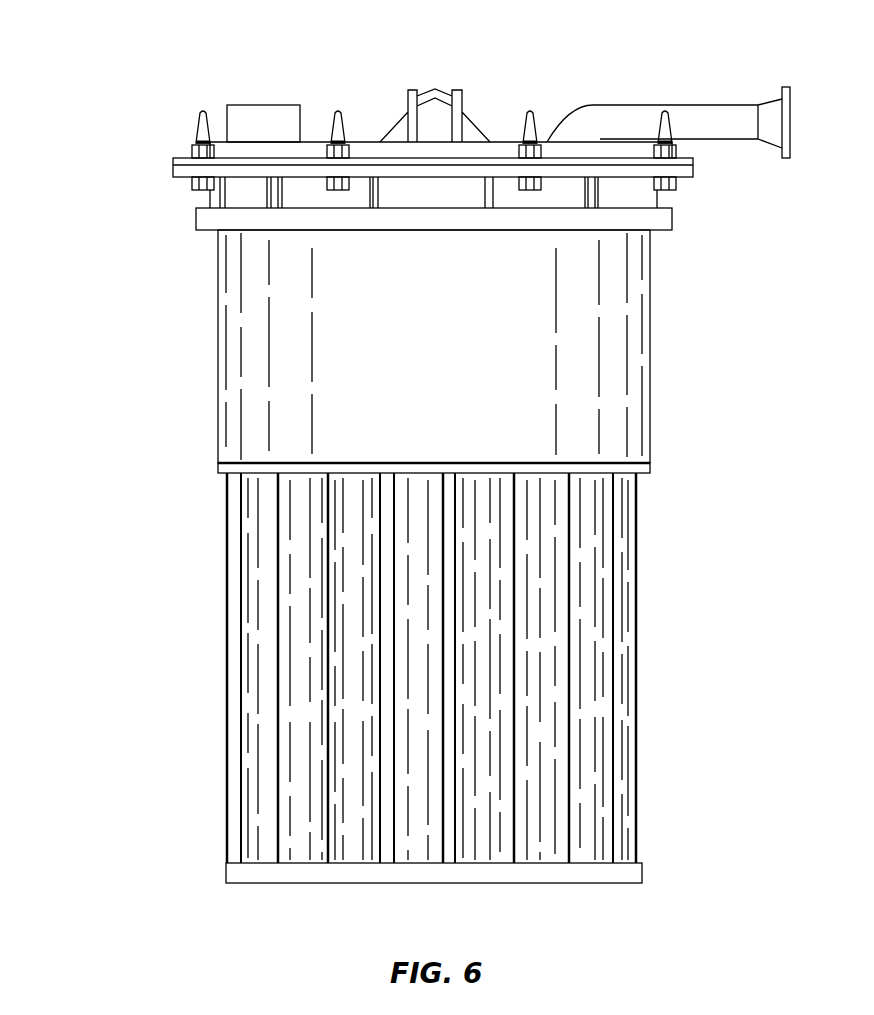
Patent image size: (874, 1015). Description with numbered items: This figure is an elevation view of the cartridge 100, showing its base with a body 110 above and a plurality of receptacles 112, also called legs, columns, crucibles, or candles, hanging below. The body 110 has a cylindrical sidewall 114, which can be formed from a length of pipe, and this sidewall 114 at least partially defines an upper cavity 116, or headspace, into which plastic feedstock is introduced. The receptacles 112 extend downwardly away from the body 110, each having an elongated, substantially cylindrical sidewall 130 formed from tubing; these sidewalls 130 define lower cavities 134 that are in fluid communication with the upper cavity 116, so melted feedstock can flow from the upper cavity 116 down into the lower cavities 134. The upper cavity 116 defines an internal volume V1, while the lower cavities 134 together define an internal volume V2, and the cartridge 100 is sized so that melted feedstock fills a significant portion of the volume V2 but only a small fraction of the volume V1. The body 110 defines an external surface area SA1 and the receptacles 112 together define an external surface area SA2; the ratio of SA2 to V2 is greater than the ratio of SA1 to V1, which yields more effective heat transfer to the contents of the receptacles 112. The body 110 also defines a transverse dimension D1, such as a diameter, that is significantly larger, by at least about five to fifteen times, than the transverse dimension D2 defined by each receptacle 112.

The cartridge 100 is at (120, 92).
The body 110 is at (690, 415).
The receptacles 112 is at (652, 718).
The sidewall 114 is at (635, 302).
The upper cavity 116 is at (577, 362).
The sidewall 130 is at (625, 798).
The lower cavities 134 is at (548, 618).
The internal volume V1 is at (298, 275).
The internal volume V2 is at (353, 618).
The external surface area SA1 is at (270, 368).
The external surface area SA2 is at (353, 837).
The transverse dimension D1 is at (650, 398).
The transverse dimension D2 is at (568, 705).